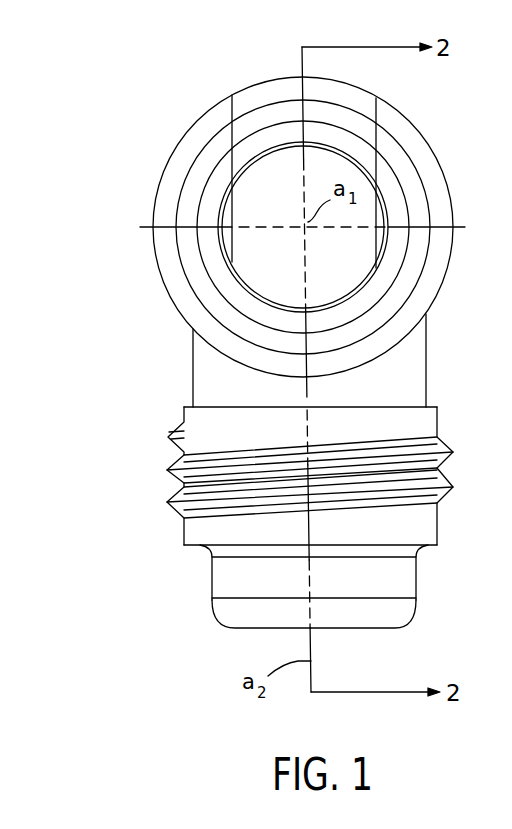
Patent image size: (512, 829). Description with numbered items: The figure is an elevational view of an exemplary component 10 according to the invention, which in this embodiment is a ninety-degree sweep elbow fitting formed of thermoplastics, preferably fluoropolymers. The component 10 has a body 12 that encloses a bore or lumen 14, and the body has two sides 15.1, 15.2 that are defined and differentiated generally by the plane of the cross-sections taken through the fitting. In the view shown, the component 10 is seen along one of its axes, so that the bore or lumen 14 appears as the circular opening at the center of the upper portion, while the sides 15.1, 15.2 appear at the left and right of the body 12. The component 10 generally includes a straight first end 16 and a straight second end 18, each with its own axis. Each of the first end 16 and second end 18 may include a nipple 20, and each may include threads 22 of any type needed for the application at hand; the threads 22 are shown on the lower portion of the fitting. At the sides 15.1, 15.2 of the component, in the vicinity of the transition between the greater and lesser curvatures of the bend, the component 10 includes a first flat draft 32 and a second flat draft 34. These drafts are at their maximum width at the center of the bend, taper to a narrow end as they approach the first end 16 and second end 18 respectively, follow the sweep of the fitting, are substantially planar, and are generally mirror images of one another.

The component 10 is at (280, 359).
The body 12 is at (427, 326).
The bore or lumen 14 is at (365, 212).
The first side 15.1 is at (192, 373).
The second side 15.2 is at (428, 378).
The first end 16 is at (198, 203).
The second end 18 is at (416, 568).
The nipple 20 is at (404, 617).
The threads 22 is at (180, 487).
The first flat draft 32 is at (378, 242).
The second flat draft 34 is at (233, 240).